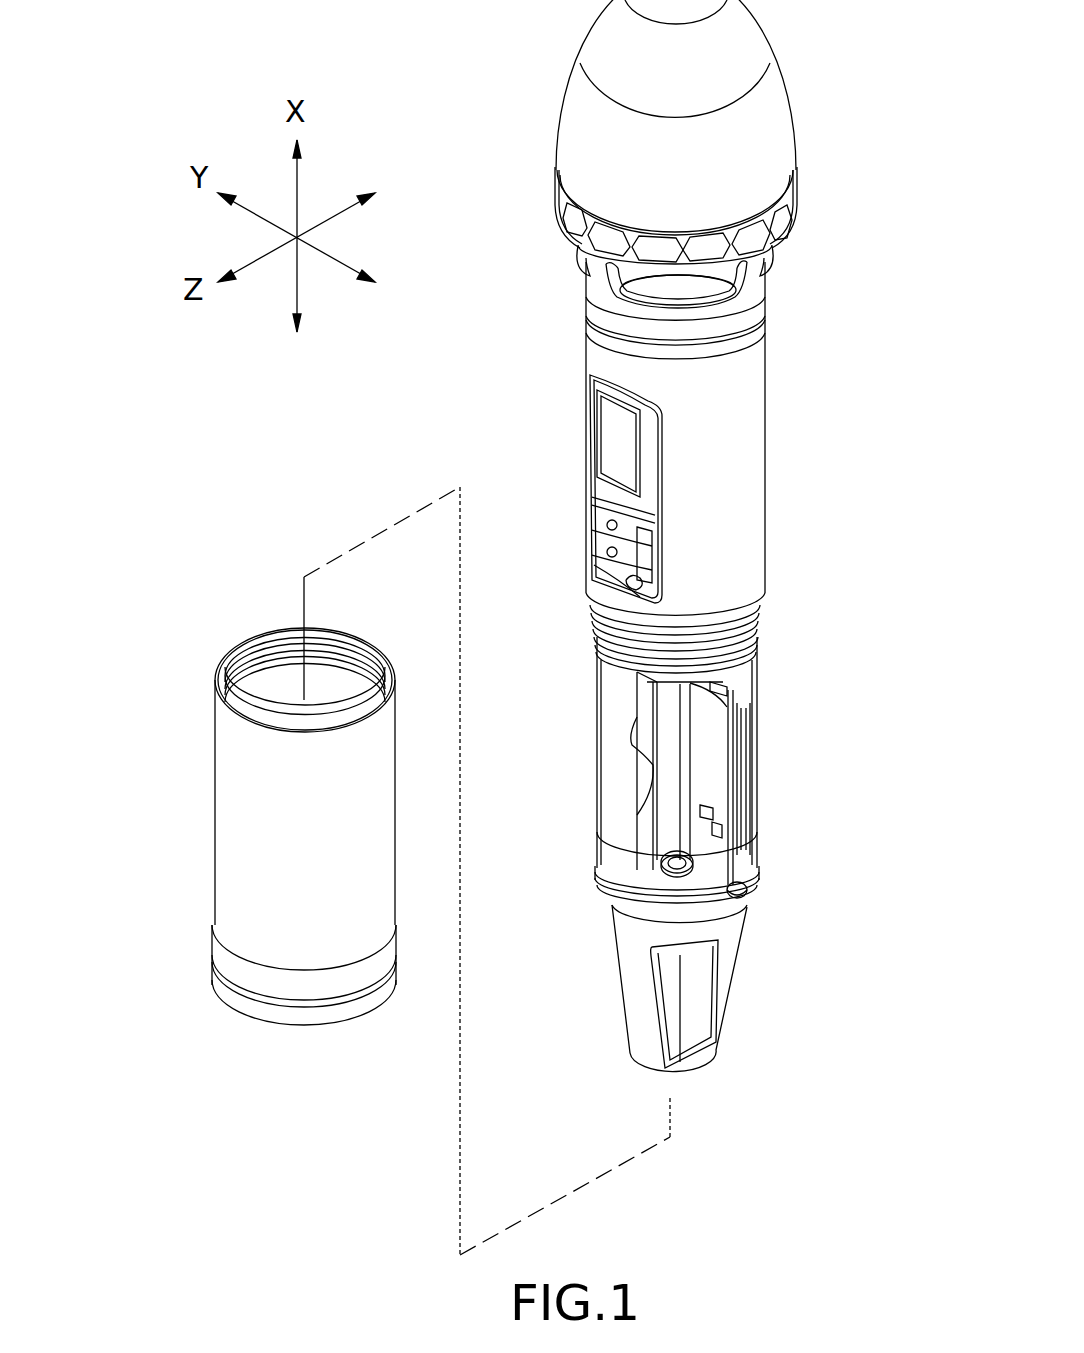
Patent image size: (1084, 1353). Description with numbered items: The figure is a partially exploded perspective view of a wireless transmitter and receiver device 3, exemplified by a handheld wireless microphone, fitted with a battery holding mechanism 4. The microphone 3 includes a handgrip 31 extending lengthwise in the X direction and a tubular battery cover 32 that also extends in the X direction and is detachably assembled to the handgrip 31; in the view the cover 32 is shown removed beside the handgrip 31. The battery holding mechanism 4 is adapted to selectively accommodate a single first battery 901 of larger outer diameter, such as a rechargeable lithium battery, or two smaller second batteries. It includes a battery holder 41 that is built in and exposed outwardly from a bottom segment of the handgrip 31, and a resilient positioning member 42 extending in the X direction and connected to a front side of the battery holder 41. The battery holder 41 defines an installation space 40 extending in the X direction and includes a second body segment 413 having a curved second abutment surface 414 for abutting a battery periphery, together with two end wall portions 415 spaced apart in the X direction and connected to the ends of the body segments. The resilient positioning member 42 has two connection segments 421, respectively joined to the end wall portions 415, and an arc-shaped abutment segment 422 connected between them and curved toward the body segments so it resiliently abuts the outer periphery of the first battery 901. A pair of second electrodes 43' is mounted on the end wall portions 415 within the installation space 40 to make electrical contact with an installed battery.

The wireless transmitter and receiver device 3 is at (688, 536).
The handgrip 31 is at (728, 448).
The tubular battery cover 32 is at (240, 818).
The first battery 901 is at (616, 707).
The battery holding mechanism 4 is at (697, 872).
The installation space 40 is at (604, 872).
The battery holder 41 is at (711, 826).
The second body segment 413 is at (731, 745).
The second abutment surface 414 is at (708, 760).
The end wall portions 415 is at (735, 705).
The resilient positioning member 42 is at (675, 771).
The connection segments 421 is at (645, 720).
The abutment segment 422 is at (640, 777).
The second electrodes 43' is at (748, 930).